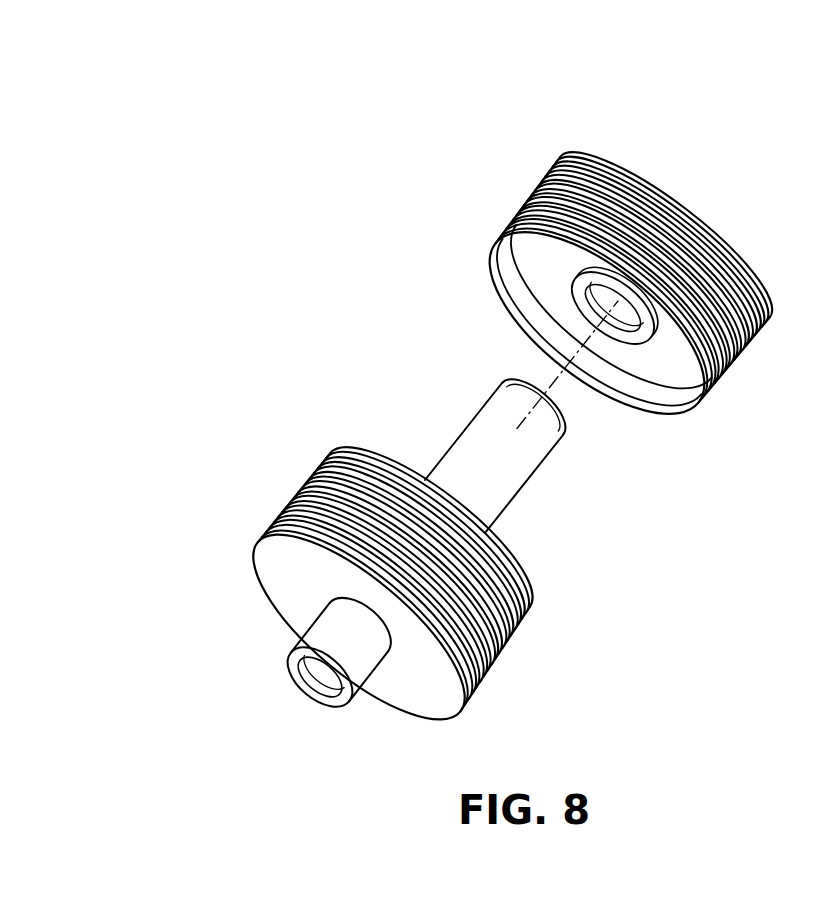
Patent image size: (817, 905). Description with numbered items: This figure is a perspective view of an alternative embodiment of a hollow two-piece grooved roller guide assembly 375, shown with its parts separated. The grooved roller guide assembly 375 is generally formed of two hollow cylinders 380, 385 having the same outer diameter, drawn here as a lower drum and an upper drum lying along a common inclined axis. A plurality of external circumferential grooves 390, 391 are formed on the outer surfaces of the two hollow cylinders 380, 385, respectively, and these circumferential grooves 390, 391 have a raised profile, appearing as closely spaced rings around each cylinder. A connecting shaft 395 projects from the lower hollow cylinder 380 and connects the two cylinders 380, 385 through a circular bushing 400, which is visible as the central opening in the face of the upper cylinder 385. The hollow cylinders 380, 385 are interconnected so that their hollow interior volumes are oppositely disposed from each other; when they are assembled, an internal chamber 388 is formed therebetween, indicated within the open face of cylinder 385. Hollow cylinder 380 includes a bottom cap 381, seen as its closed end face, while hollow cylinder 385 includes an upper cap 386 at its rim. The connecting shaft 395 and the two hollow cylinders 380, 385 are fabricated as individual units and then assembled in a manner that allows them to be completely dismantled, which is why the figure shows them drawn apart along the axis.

The grooved roller guide assembly 375 is at (336, 37).
The hollow cylinder 380 is at (324, 573).
The bottom cap 381 is at (402, 695).
The hollow cylinder 385 is at (553, 274).
The upper cap 386 is at (563, 261).
The internal chamber 388 is at (524, 290).
The external circumferential grooves 390 is at (363, 487).
The external circumferential grooves 391 is at (538, 213).
The connecting shaft 395 is at (462, 448).
The circular bushing 400 is at (625, 323).